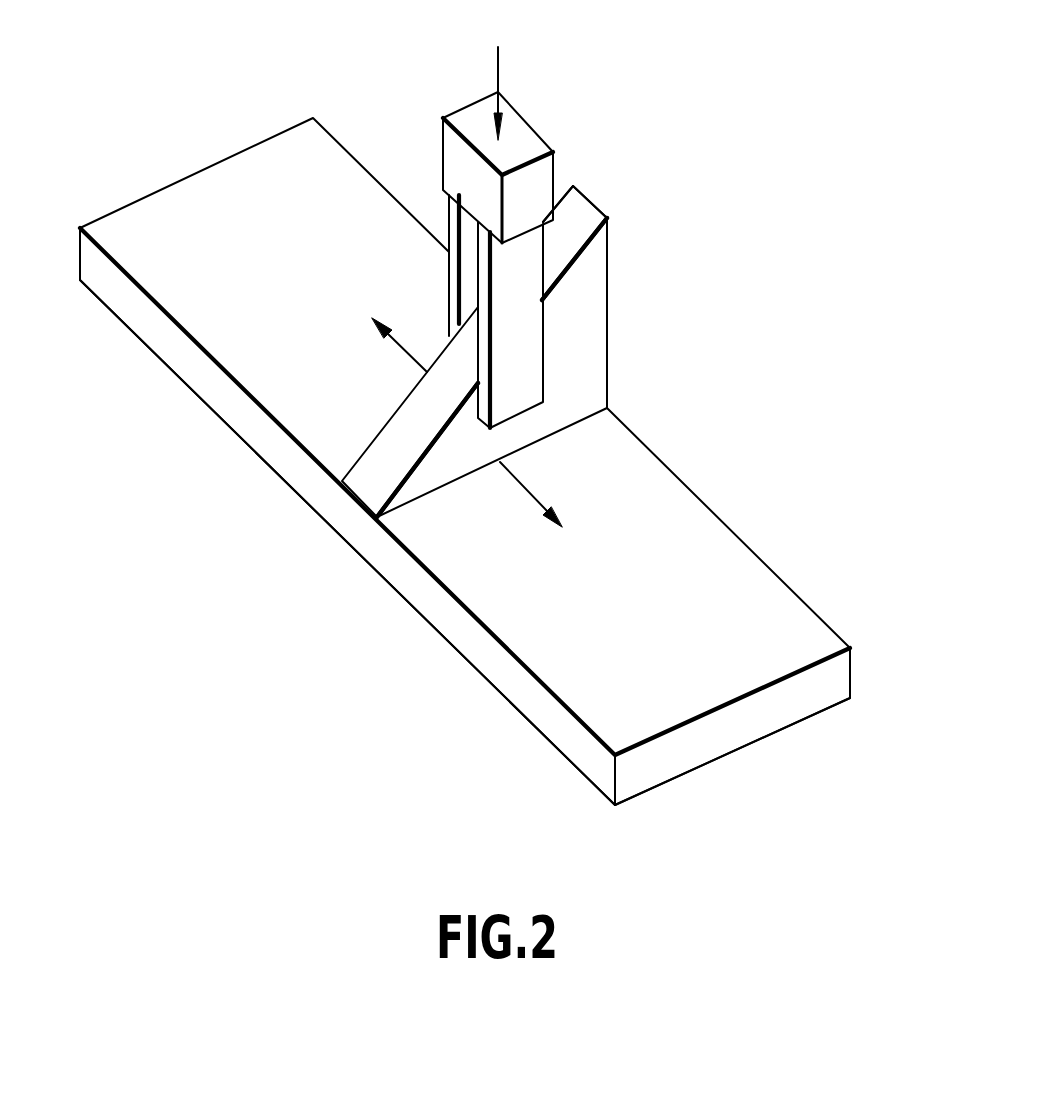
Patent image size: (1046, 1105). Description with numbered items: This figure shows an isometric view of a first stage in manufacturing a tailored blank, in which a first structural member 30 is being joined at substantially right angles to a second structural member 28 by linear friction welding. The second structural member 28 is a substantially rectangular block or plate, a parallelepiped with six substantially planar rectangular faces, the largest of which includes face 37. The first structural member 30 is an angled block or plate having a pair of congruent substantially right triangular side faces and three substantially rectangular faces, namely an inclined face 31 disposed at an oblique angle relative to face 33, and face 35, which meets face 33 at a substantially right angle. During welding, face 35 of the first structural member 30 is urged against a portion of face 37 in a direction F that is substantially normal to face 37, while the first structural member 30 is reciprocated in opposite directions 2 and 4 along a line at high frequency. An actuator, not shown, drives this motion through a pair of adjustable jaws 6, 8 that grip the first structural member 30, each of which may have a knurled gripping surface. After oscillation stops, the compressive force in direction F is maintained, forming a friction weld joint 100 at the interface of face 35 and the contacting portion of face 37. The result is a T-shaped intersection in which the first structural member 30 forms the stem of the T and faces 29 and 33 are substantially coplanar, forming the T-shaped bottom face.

The direction 2 is at (407, 355).
The direction 4 is at (522, 487).
The adjustable jaw 6 is at (448, 218).
The adjustable jaw 8 is at (515, 313).
The second structural member 28 is at (712, 735).
The face 29 is at (853, 672).
The first structural member 30 is at (590, 356).
The inclined face 31 is at (383, 463).
The face 33 is at (590, 198).
The face 35 is at (572, 423).
The face 37 is at (547, 653).
The friction weld joint 100 is at (433, 493).
The direction F is at (497, 76).